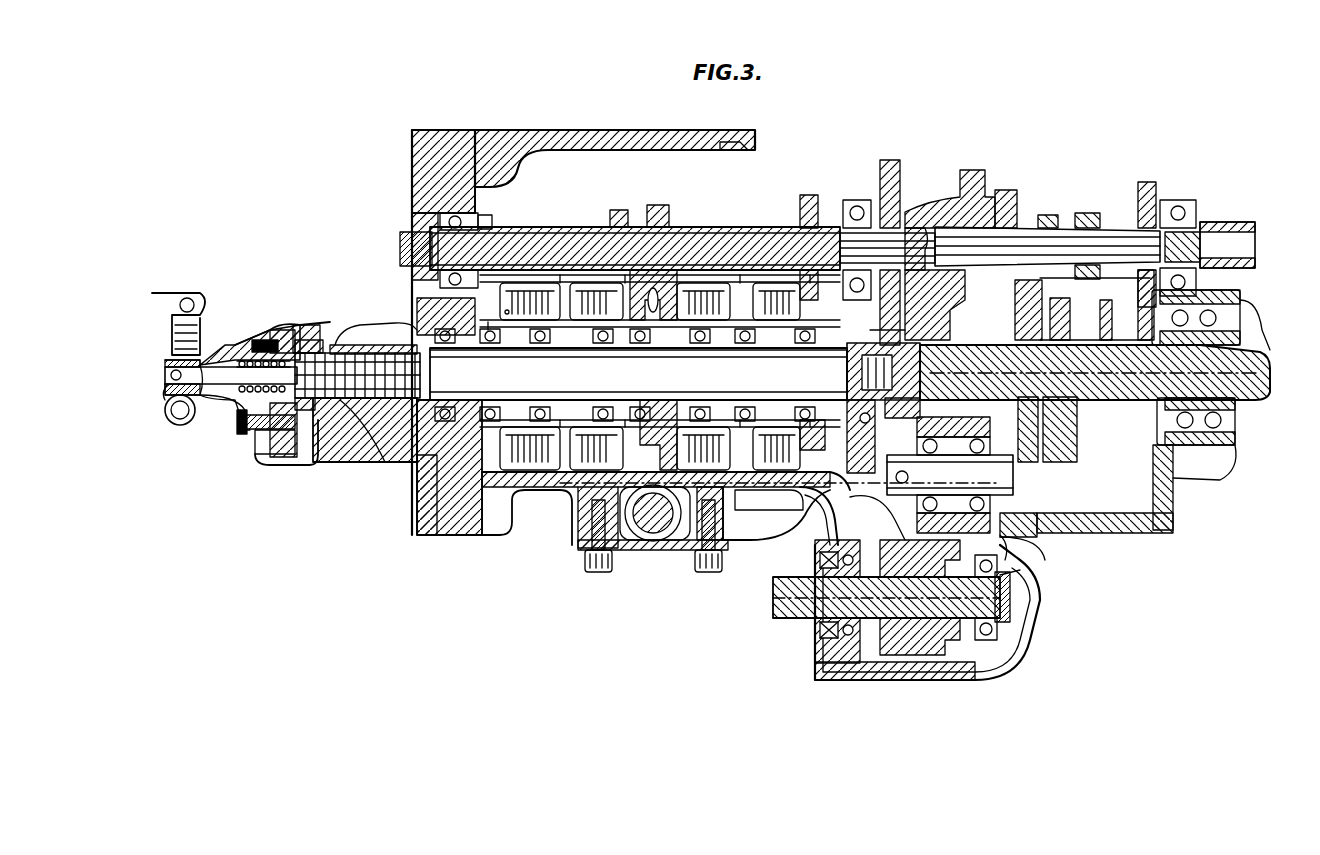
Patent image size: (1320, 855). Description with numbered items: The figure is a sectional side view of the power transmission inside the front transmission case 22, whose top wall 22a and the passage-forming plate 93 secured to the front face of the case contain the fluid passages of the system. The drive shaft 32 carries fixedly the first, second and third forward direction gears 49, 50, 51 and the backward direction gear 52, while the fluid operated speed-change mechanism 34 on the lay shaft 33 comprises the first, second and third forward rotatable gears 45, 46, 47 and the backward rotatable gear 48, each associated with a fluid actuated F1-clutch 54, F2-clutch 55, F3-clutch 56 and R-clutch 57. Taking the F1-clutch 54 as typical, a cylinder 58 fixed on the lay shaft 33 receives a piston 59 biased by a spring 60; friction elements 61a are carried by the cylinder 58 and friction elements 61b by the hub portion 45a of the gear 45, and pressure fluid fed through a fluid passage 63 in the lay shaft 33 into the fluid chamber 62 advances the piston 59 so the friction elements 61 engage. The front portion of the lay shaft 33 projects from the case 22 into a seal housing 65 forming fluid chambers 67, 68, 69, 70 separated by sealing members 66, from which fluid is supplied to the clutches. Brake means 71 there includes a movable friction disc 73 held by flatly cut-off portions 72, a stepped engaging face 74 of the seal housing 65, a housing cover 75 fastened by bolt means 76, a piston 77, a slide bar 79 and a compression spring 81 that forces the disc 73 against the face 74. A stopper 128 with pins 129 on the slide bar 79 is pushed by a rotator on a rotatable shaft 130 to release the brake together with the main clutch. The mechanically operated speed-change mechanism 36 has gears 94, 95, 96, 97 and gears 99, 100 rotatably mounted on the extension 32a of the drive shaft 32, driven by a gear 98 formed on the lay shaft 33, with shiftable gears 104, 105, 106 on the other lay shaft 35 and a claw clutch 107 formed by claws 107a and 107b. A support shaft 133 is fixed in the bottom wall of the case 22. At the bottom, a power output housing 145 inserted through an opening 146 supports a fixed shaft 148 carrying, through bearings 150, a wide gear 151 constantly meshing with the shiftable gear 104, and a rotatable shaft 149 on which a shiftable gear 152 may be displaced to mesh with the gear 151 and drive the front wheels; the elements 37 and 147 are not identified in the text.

The front transmission case 22 is at (765, 495).
The top wall of the transmission case 22a is at (580, 148).
The drive shaft 32 is at (690, 245).
The extension of the drive shaft 32a is at (1022, 240).
The lay shaft 33 is at (420, 320).
The fluid operated speed-change mechanism 34 is at (440, 535).
The lay shaft 35 is at (1112, 400).
The mechanically operated speed-change mechanism 36 is at (1195, 445).
The shaft nose 37 is at (1240, 352).
The first forward direction rotatable gear 45 is at (585, 495).
The hub portion of the gear 45a is at (700, 390).
The second forward direction rotatable gear 46 is at (695, 550).
The third forward direction rotatable gear 47 is at (810, 440).
The backward direction rotatable gear 48 is at (415, 500).
The first forward direction gear 49 is at (618, 210).
The second forward direction gear 50 is at (660, 205).
The third forward direction gear 51 is at (805, 195).
The backward direction gear 52 is at (485, 218).
The F1-clutch 54 is at (612, 400).
The F2-clutch 55 is at (722, 410).
The F3-clutch 56 is at (775, 412).
The R-clutch 57 is at (515, 410).
The cylinder 58 is at (565, 283).
The piston 59 is at (535, 283).
The spring 60 is at (650, 400).
The friction elements 61 is at (565, 410).
The friction elements 61a is at (610, 283).
The friction elements 61b is at (522, 477).
The fluid chamber 62 is at (545, 410).
The fluid passage 63 is at (598, 410).
The seal housing 65 is at (360, 462).
The sealing members 66 is at (368, 345).
The fluid chamber 67 is at (335, 345).
The fluid chamber 68 is at (355, 325).
The fluid chamber 69 is at (380, 455).
The fluid chamber 70 is at (375, 345).
The brake means 71 is at (308, 340).
The flatly cut-off portions 72 is at (280, 335).
The movable friction disc 73 is at (285, 455).
The stepped engaging face 74 is at (312, 465).
The housing cover 75 is at (255, 340).
The bolt means 76 is at (248, 435).
The piston 77 is at (250, 432).
The slide bar 79 is at (220, 362).
The compression spring 81 is at (235, 405).
The passage-forming plate 93 is at (425, 160).
The gear 94 is at (888, 160).
The gear 95 is at (972, 170).
The gear 96 is at (1005, 192).
The gear 97 is at (1085, 213).
The gear 98 is at (862, 455).
The gear 99 is at (1150, 185).
The gear 100 is at (1118, 280).
The shiftable gear 104 is at (935, 335).
The shiftable gear 105 is at (1028, 440).
The shiftable gear 106 is at (1060, 455).
The claw clutch 107 is at (845, 205).
The claws 107a is at (910, 415).
The claws 107b is at (920, 210).
The stopper 128 is at (170, 418).
The pins 129 is at (172, 375).
The rotatable shaft 130 is at (200, 430).
The support shaft 133 is at (645, 545).
The power output housing 145 is at (1025, 612).
The opening 146 is at (1040, 565).
The wall 147 is at (828, 528).
The fixed shaft 148 is at (990, 470).
The rotatable shaft 149 is at (888, 620).
The bearings 150 is at (870, 505).
The gear 151 is at (985, 665).
The shiftable gear 152 is at (935, 650).